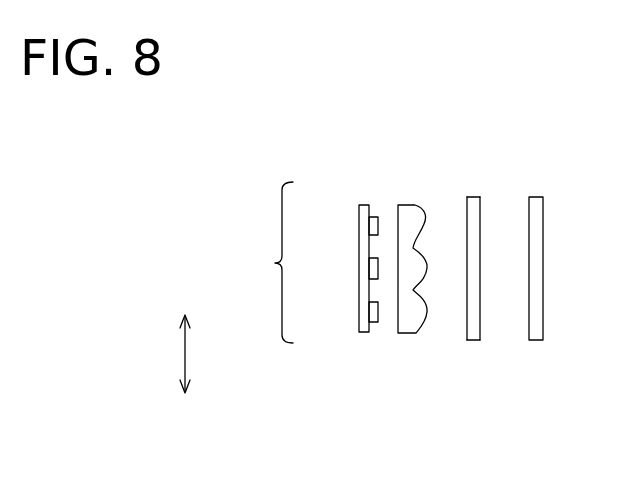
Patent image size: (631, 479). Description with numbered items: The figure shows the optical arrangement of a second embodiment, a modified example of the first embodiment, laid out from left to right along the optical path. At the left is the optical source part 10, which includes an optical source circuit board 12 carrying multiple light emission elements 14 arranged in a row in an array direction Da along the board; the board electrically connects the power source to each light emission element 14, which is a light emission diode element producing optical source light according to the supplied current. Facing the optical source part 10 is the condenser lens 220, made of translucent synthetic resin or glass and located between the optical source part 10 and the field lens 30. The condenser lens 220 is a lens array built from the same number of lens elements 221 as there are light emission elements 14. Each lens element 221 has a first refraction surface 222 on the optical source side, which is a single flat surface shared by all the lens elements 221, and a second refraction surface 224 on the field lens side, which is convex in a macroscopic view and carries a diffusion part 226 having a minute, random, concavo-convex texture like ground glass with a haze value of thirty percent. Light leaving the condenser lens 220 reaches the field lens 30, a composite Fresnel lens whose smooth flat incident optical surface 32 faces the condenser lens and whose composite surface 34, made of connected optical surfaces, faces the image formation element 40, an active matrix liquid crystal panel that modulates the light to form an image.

The optical source part 10 is at (275, 263).
The optical source circuit board 12 is at (358, 215).
The light emission element 14 is at (358, 228).
The condenser lens 220 is at (393, 338).
The lens element 221 is at (424, 222).
The first refraction surface 222 is at (398, 205).
The second refraction surface 224 is at (428, 275).
The diffusion part 226 is at (422, 206).
The field lens 30 is at (472, 342).
The incident optical surface 32 is at (467, 215).
The composite surface 34 is at (483, 220).
The image formation element 40 is at (537, 343).
The array direction Da is at (202, 354).